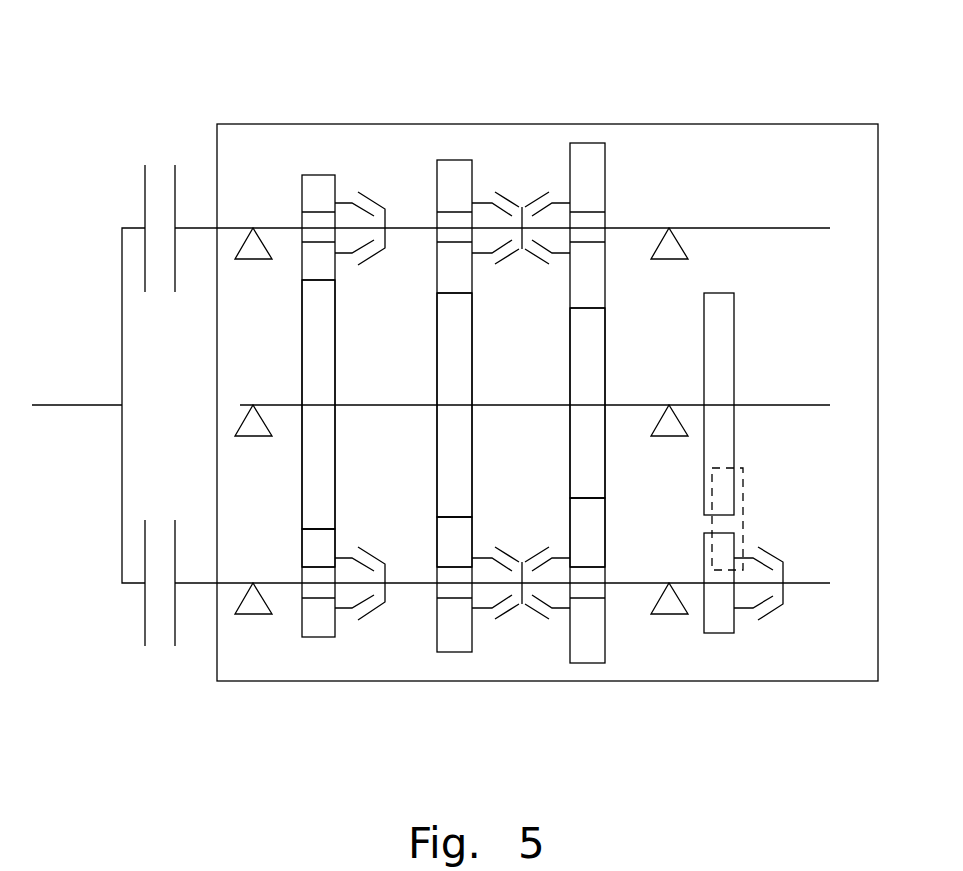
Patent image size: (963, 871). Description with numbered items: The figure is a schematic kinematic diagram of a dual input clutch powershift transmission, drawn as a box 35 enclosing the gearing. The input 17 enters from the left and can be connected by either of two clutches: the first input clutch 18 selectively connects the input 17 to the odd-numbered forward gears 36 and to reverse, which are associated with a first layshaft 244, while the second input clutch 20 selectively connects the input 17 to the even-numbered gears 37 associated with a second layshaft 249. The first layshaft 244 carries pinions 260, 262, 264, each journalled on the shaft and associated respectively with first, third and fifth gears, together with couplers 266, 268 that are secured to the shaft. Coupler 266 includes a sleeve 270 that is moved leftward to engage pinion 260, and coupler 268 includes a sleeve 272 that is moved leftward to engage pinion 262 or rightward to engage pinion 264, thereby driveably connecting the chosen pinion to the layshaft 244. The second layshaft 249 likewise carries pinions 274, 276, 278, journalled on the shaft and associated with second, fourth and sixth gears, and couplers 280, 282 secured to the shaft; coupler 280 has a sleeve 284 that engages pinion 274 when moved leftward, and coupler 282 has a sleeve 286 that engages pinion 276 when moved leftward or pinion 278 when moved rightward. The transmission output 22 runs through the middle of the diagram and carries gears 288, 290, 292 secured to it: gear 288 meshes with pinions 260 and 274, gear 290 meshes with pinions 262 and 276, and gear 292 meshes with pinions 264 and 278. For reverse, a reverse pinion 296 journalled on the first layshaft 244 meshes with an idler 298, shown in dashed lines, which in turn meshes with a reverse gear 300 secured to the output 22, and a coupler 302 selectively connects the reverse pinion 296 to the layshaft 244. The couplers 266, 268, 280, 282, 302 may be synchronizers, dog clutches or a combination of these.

The input 17 is at (82, 405).
The first input clutch 18 is at (145, 608).
The second input clutch 20 is at (145, 200).
The transmission output 22 is at (798, 405).
The transmission housing 35 is at (495, 124).
The odd-numbered forward gears 36 is at (355, 657).
The even-numbered gears 37 is at (363, 146).
The first layshaft 244 is at (195, 585).
The second layshaft 249 is at (200, 225).
The pinion 260 is at (301, 555).
The pinion 262 is at (437, 555).
The pinion 264 is at (605, 538).
The coupler 266 is at (385, 587).
The coupler 268 is at (526, 600).
The sleeve 270 is at (368, 548).
The sleeve 272 is at (517, 565).
The pinion 274 is at (313, 174).
The pinion 276 is at (461, 160).
The pinion 278 is at (590, 143).
The coupler 280 is at (393, 213).
The coupler 282 is at (522, 236).
The sleeve 284 is at (377, 253).
The sleeve 286 is at (510, 205).
The gear 288 is at (335, 457).
The gear 290 is at (473, 453).
The gear 292 is at (605, 478).
The reverse pinion 296 is at (712, 633).
The idler 298 is at (743, 473).
The reverse gear 300 is at (703, 349).
The coupler 302 is at (783, 567).